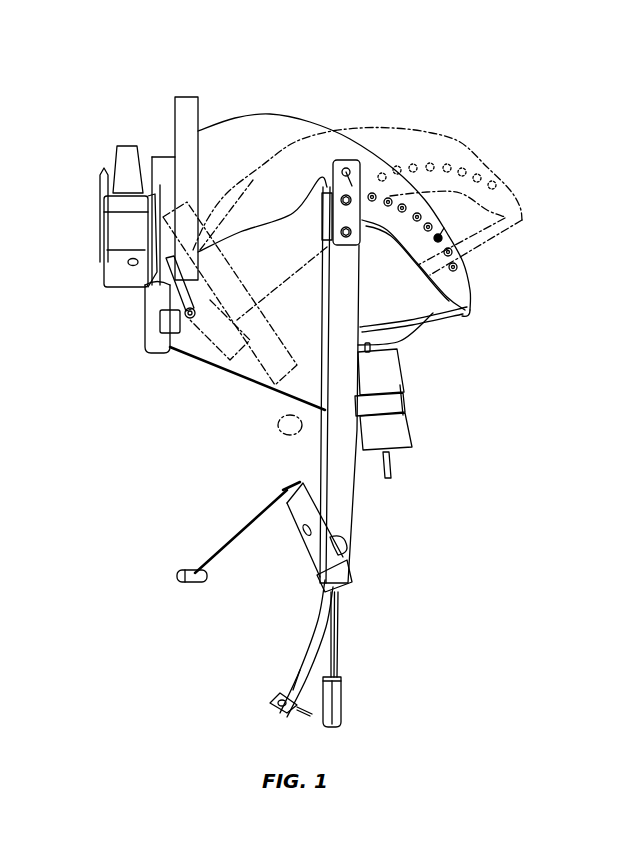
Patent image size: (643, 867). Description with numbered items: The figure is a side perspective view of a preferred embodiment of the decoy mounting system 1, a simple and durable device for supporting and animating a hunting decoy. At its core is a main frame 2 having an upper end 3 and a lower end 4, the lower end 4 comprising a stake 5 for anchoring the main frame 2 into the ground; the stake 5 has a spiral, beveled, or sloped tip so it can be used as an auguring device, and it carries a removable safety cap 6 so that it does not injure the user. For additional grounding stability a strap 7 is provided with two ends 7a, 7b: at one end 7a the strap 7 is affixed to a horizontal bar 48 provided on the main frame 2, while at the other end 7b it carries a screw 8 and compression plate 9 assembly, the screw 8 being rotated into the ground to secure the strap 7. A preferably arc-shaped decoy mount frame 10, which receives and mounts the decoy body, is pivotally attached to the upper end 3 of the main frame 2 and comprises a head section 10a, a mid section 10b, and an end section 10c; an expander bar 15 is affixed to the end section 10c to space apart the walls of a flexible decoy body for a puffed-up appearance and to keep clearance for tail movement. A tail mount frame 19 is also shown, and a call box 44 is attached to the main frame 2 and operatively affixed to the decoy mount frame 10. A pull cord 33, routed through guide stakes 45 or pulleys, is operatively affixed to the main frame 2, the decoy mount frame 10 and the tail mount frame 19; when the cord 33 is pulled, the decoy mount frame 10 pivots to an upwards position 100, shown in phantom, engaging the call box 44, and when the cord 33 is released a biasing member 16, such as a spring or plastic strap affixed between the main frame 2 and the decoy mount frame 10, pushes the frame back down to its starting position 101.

The decoy mounting system 1 is at (545, 176).
The main frame 2 is at (346, 493).
The upper end 3 is at (358, 284).
The lower end 4 is at (352, 540).
The stake 5 is at (340, 630).
The removable safety cap 6 is at (340, 703).
The strap 7 is at (313, 634).
The strap end 7a is at (320, 613).
The strap end 7b is at (293, 683).
The screw 8 is at (300, 713).
The compression plate 9 is at (273, 693).
The decoy mount frame 10 is at (278, 115).
The head section 10a is at (468, 278).
The mid section 10b is at (334, 131).
The end section 10c is at (213, 133).
The expander bar 15 is at (170, 285).
The biasing member 16 is at (433, 316).
The tail mount frame 19 is at (124, 145).
The pull cord 33 is at (240, 528).
The call box 44 is at (413, 424).
The guide stakes 45 is at (310, 413).
The horizontal bar 48 is at (322, 541).
The upwards position 100 is at (474, 153).
The starting position 101 is at (473, 288).